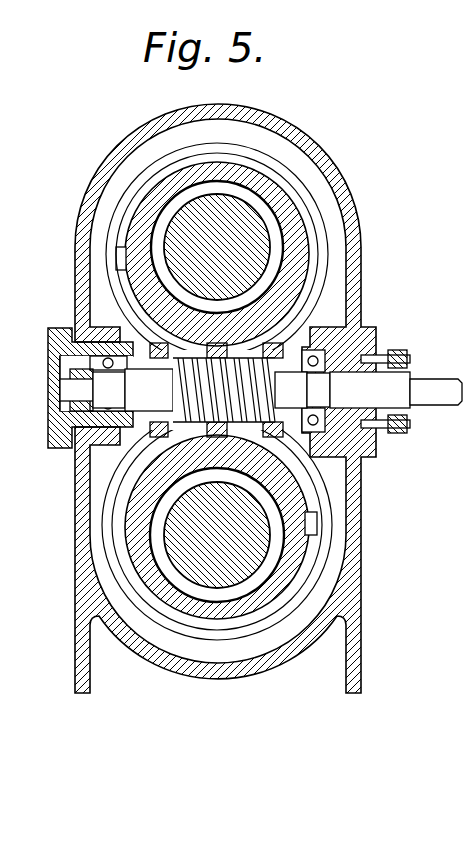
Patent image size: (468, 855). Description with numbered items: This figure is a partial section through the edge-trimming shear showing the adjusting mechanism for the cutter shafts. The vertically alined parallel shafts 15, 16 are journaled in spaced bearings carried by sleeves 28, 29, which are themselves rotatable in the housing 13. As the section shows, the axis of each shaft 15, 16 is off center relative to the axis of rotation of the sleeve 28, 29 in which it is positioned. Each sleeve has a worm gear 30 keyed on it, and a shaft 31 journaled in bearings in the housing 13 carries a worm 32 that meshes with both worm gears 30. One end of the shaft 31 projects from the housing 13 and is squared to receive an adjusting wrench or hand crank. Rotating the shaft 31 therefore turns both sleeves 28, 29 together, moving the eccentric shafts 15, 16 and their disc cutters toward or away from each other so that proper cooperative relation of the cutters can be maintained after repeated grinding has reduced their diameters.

The housing 13 is at (118, 148).
The shaft 15 is at (250, 236).
The shaft 16 is at (250, 548).
The sleeve 28 is at (268, 178).
The sleeve 29 is at (182, 613).
The worm gear 30 is at (318, 257).
The shaft 31 is at (393, 386).
The worm 32 is at (117, 457).